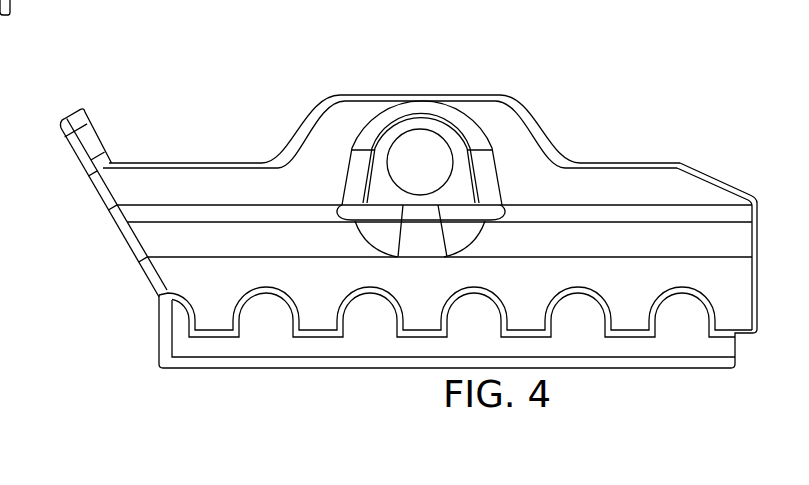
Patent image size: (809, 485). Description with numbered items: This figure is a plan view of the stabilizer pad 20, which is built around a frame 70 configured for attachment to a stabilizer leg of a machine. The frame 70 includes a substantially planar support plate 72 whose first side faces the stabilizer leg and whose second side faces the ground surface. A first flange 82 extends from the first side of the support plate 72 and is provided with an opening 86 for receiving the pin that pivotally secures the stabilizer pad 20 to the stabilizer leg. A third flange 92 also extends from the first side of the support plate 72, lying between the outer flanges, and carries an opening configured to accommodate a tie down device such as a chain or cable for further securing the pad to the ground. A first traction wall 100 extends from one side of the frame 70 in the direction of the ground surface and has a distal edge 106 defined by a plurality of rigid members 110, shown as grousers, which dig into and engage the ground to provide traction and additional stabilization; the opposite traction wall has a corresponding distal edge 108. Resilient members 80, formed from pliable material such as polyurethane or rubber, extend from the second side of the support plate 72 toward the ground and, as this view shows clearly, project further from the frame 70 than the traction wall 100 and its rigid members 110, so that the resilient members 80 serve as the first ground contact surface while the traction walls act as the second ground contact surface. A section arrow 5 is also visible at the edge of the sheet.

The stabilizer pad 20 is at (701, 59).
The frame 70 is at (108, 208).
The resilient members 80 is at (158, 366).
The first flange 82 is at (570, 163).
The opening 86 is at (447, 140).
The third flange 92 is at (88, 148).
The first traction wall 100 is at (743, 242).
The distal edge 106 is at (742, 337).
The rigid members 110 is at (423, 334).
The section view direction arrow 5 is at (10, 46).
The support plate 72 is at (66, 3).
The distal edge 108 is at (66, 0).